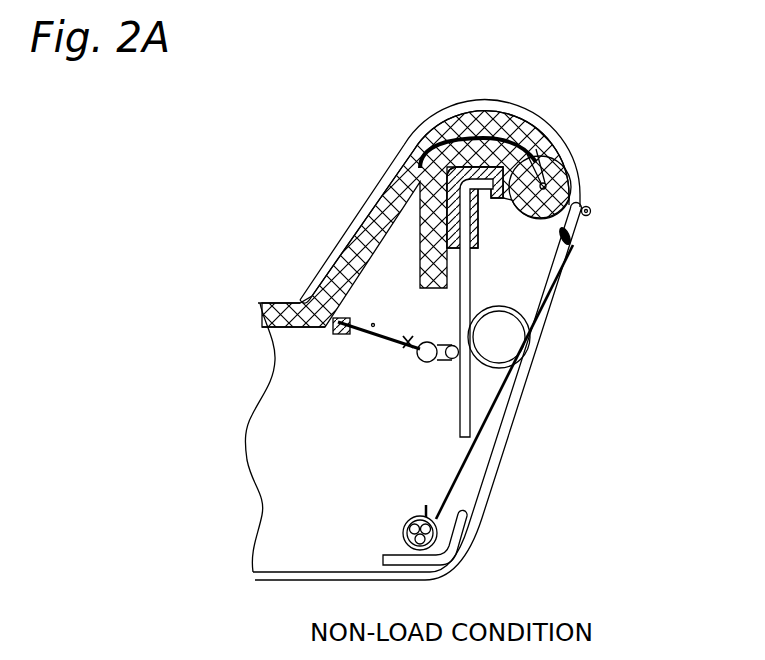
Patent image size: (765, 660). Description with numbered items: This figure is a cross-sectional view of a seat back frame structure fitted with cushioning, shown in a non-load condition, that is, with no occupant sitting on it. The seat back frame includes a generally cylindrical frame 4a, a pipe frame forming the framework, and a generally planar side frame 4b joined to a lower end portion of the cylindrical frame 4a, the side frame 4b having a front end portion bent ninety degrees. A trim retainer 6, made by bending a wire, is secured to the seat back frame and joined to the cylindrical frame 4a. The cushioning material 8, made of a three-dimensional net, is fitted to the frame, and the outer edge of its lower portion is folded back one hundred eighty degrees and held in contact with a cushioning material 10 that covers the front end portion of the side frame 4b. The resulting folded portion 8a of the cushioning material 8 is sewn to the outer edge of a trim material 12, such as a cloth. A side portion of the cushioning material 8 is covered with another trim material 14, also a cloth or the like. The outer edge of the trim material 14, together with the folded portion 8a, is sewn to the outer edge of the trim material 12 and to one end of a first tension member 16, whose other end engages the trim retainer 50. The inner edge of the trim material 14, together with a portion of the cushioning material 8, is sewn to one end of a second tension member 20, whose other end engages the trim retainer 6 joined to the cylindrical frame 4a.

The generally cylindrical frame 4a is at (524, 311).
The side frame 4b is at (472, 413).
The trim retainer 6 is at (423, 358).
The cushioning material 8 is at (285, 303).
The folded portion 8a is at (563, 177).
The cushioning material 10 is at (477, 228).
The trim material 12 is at (517, 413).
The trim material 14 is at (513, 100).
The first tension member 16 is at (455, 479).
The second tension member 20 is at (373, 325).
The trim retainer 50 is at (403, 537).